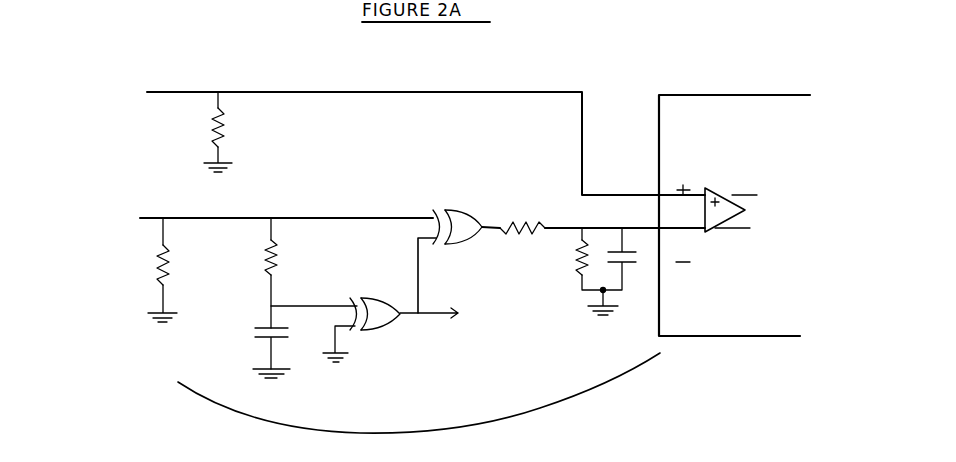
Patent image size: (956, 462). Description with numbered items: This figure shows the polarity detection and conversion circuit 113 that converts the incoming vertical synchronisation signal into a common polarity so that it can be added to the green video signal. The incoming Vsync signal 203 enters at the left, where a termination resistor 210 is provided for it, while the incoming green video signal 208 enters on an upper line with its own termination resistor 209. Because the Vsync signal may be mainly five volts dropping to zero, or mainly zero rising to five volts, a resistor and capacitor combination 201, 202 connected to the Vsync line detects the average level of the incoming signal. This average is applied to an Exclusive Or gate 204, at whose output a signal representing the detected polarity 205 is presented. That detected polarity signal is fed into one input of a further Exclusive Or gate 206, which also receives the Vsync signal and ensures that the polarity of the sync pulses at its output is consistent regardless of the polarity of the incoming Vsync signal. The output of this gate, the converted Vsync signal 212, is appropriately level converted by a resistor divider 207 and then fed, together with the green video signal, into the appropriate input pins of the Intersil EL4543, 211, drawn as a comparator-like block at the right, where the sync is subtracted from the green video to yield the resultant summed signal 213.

The polarity detection and conversion circuit 113 is at (532, 408).
The resistor 201 is at (278, 270).
The capacitor 202 is at (284, 345).
The Vsync signal 203 is at (85, 206).
The Exclusive Or gate 204 is at (380, 334).
The detected polarity signal 205 is at (509, 328).
The further Exclusive Or gate 206 is at (455, 206).
The resistor divider 207 is at (560, 280).
The green video signal 208 is at (118, 71).
The termination resistor 209 is at (272, 134).
The termination resistor 210 is at (145, 268).
The Intersil EL4543 211 is at (735, 336).
The converted Vsync signal 212 is at (496, 217).
The resultant summed signal 213 is at (776, 180).